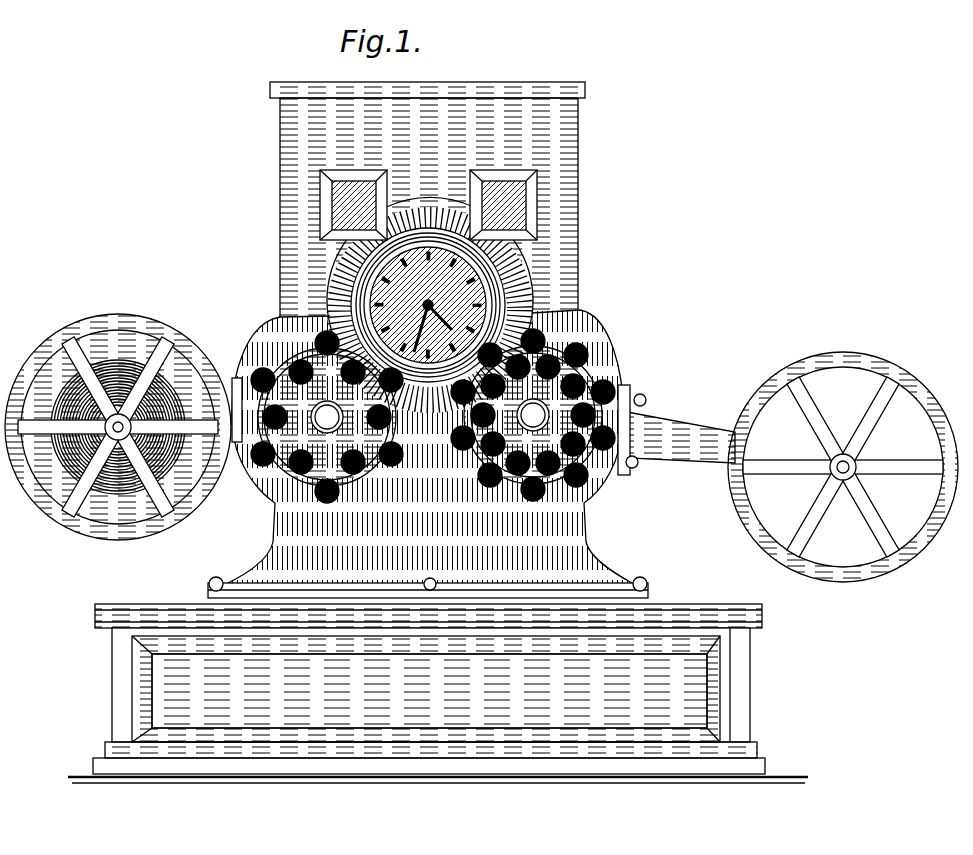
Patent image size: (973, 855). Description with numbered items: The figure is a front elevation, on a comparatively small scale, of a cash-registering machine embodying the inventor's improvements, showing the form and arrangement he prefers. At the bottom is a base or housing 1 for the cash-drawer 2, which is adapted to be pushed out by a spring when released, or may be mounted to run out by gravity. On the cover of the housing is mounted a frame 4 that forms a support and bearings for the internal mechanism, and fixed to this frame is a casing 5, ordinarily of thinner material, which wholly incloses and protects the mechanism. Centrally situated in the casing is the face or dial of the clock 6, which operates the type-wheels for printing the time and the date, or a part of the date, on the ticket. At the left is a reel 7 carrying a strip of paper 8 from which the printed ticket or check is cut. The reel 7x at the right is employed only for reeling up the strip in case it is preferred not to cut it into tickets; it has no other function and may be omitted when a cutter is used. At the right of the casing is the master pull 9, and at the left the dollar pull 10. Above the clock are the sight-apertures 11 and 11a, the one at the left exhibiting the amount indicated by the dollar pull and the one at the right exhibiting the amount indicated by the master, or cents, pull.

The base or housing 1 is at (756, 648).
The cash-drawer 2 is at (429, 691).
The frame 4 is at (428, 397).
The casing 5 is at (579, 285).
The clock 6 is at (428, 305).
The reel 7 is at (118, 412).
The reel 7x is at (788, 454).
The strip of paper 8 is at (108, 427).
The master pull 9 is at (533, 415).
The dollar pull 10 is at (327, 417).
The sight-aperture 11 is at (353, 193).
The sight-aperture 11a is at (504, 192).